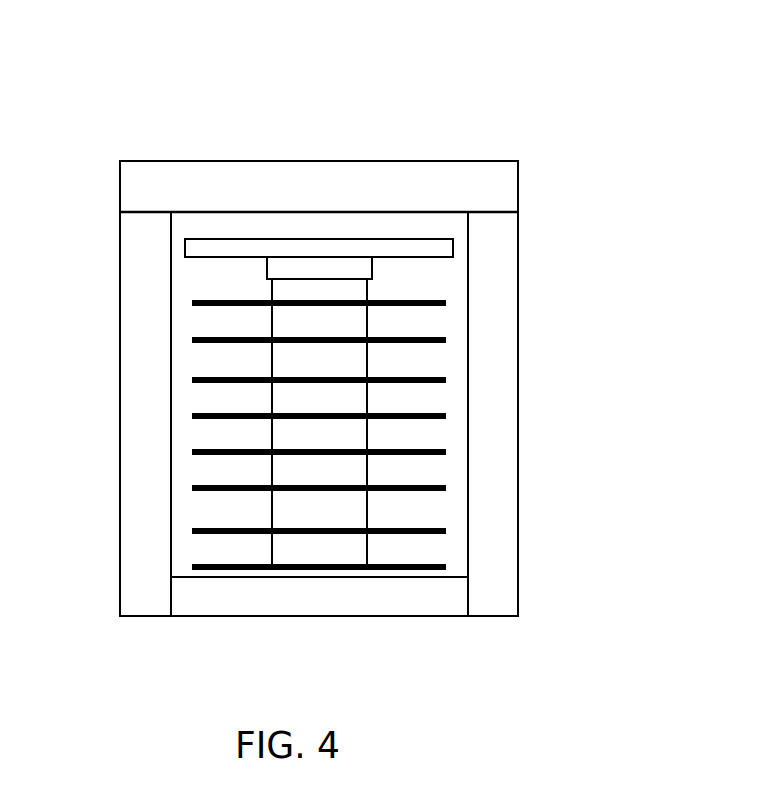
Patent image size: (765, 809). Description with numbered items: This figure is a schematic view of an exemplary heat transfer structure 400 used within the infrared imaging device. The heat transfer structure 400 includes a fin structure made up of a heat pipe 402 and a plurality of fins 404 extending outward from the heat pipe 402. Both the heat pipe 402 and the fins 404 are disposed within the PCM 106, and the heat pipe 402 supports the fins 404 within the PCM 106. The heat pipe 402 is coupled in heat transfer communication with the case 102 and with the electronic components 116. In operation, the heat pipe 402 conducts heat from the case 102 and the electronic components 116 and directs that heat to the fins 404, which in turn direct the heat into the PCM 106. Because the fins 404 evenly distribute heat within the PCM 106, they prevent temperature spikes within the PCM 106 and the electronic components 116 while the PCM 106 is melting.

The heat transfer structure 400 is at (509, 73).
The case 102 is at (518, 285).
The PCM 106 is at (457, 360).
The electronic components 116 is at (317, 240).
The heat pipe 402 is at (368, 515).
The fins 404 is at (195, 381).